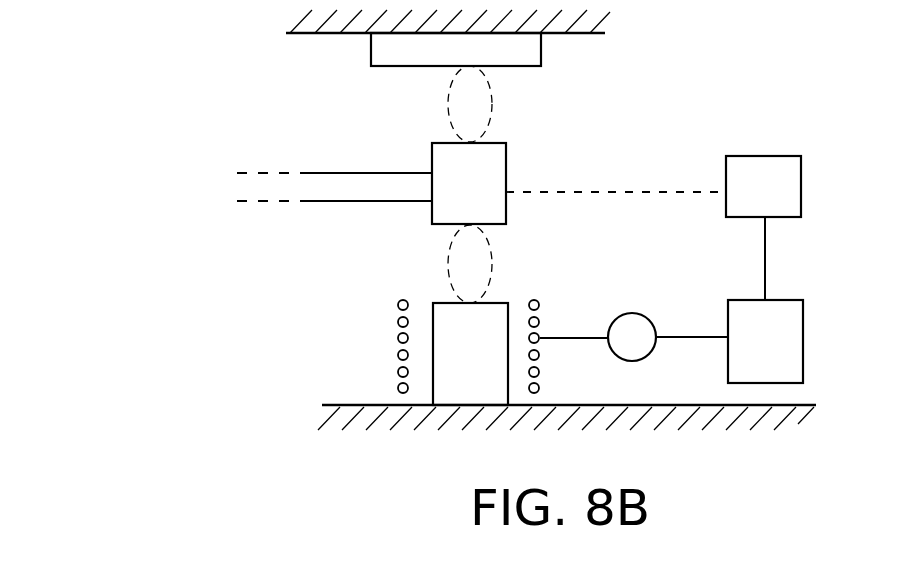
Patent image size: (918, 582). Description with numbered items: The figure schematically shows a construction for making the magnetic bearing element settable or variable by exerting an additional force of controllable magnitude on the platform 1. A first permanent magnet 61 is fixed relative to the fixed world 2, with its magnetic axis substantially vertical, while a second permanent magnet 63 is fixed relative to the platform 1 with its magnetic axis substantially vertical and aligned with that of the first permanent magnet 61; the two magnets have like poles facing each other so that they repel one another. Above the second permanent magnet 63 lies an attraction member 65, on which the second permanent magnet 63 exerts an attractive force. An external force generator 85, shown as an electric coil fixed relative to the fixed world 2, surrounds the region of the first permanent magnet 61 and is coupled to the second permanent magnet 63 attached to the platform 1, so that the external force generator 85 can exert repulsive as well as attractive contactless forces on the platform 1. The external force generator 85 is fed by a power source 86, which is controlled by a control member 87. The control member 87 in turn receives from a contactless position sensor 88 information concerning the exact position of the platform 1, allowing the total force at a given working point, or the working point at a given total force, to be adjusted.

The platform 1 is at (310, 202).
The fixed world 2 is at (297, 35).
The first permanent magnet 61 is at (433, 303).
The second permanent magnet 63 is at (507, 158).
The attraction member 65 is at (392, 66).
The external force generator 85 is at (534, 300).
The power source 86 is at (631, 313).
The control member 87 is at (784, 357).
The contactless position sensor 88 is at (781, 202).